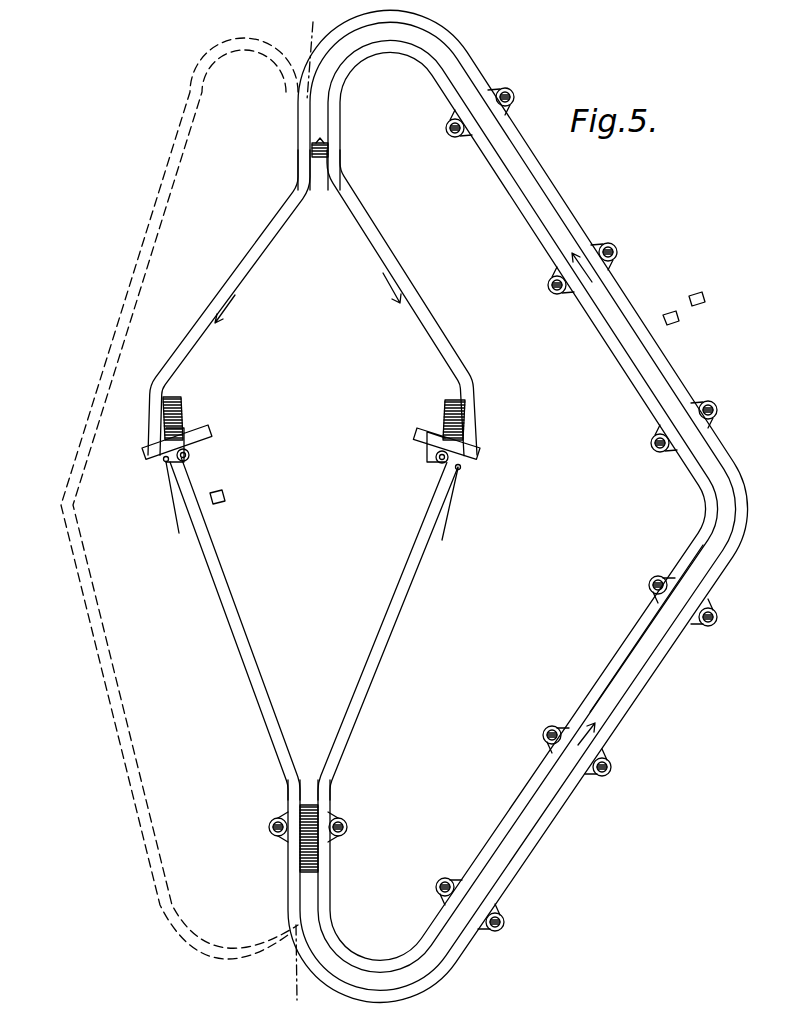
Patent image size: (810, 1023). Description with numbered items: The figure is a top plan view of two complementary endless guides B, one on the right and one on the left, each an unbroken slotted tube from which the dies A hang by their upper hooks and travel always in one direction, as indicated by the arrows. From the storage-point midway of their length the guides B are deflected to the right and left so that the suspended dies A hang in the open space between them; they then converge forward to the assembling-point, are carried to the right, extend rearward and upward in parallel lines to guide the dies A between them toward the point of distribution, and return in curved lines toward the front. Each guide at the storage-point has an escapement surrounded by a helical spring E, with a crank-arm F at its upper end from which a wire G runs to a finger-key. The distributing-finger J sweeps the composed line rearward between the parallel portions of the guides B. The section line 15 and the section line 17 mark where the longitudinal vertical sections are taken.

The section line 17- 17 is at (307, 512).
The dies A is at (330, 150).
The distributing-finger J is at (318, 161).
The helical spring E is at (182, 441).
The crank-arm F is at (186, 462).
The wire G is at (175, 503).
The endless guides B is at (260, 697).
The section line 15- 15 is at (745, 518).